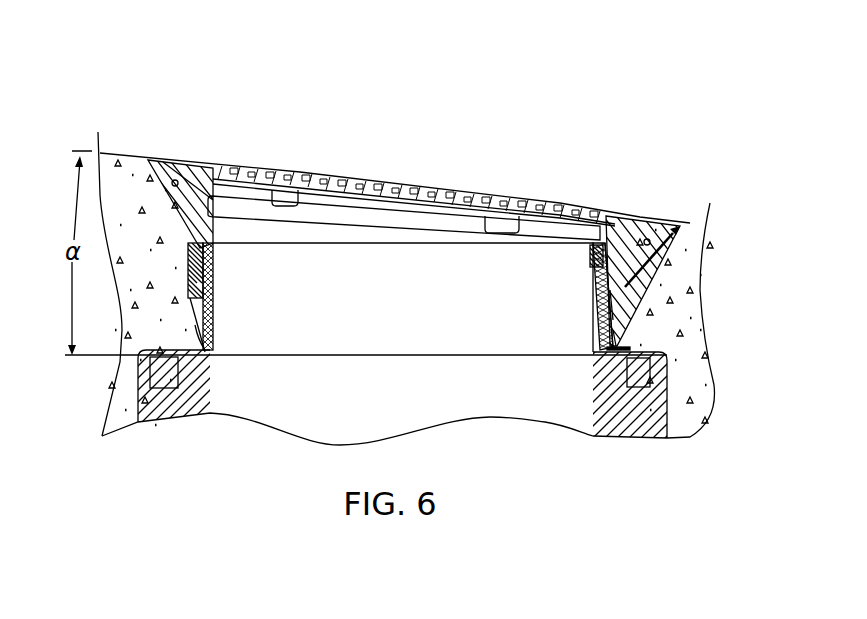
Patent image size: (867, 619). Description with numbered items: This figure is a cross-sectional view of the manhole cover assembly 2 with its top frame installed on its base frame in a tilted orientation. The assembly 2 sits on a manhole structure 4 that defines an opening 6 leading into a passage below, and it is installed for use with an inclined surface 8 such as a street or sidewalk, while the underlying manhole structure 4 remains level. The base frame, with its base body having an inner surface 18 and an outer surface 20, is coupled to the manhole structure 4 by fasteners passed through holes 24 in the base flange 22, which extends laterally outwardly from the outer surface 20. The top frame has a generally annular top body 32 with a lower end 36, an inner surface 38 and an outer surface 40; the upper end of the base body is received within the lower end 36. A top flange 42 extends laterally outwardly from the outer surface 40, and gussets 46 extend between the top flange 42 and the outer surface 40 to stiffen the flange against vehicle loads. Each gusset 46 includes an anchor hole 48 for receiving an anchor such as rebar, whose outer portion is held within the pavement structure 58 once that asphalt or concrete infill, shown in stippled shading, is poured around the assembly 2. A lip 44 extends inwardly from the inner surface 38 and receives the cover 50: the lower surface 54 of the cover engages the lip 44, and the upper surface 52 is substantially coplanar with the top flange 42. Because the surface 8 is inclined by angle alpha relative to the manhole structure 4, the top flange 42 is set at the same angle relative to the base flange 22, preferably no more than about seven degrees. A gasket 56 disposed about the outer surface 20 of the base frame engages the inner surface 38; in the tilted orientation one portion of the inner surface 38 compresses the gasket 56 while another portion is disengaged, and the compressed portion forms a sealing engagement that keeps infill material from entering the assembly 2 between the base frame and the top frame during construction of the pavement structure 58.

The manhole cover assembly 2 is at (206, 112).
The manhole structure 4 is at (672, 390).
The opening 6 is at (389, 393).
The inclined surface 8 is at (148, 160).
The inner surface 18 is at (592, 319).
The outer surface 20 is at (198, 325).
The base flange 22 is at (630, 342).
The holes 24 is at (167, 357).
The top body 32 is at (613, 279).
The lower end 36 is at (192, 300).
The inner surface 38 is at (607, 289).
The outer surface 40 is at (616, 328).
The top flange 42 is at (675, 228).
The lip 44 is at (221, 177).
The gussets 46 is at (196, 207).
The anchor hole 48 is at (173, 180).
The cover 50 is at (433, 193).
The upper surface 52 is at (495, 196).
The lower surface 54 is at (391, 205).
The gasket 56 is at (200, 264).
The pavement structure 58 is at (692, 228).